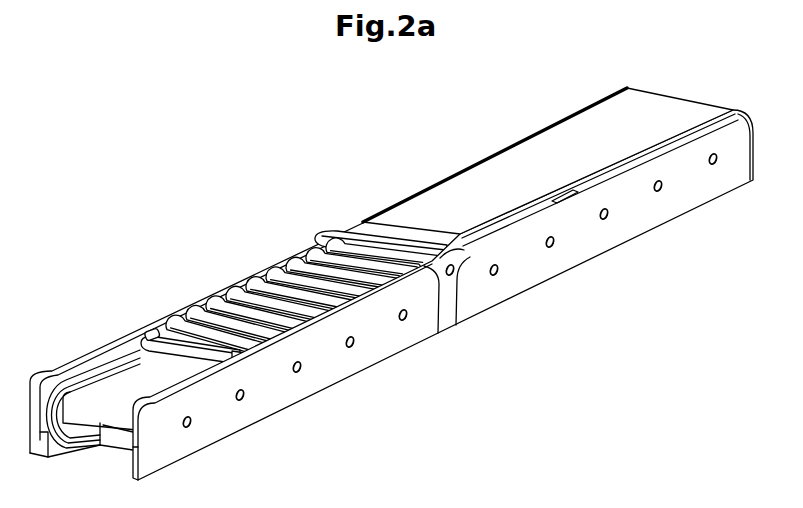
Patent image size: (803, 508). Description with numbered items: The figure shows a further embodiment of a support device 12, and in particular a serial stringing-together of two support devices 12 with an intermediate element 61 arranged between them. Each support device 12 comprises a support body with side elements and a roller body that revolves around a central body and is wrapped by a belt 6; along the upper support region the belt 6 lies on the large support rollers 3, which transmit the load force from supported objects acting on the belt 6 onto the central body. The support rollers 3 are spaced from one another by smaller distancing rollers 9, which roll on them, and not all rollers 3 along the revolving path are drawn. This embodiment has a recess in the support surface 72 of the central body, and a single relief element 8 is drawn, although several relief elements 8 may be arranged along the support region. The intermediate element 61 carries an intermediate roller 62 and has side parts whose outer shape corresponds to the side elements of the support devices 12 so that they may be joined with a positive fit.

The belt 6 is at (478, 176).
The intermediate roller 62 is at (352, 234).
The distancing rollers 9 is at (299, 267).
The support rollers 3 is at (252, 294).
The relief element 8 is at (156, 331).
The support surface 72 is at (128, 383).
The support device 12 is at (330, 397).
The intermediate element 61 is at (450, 319).